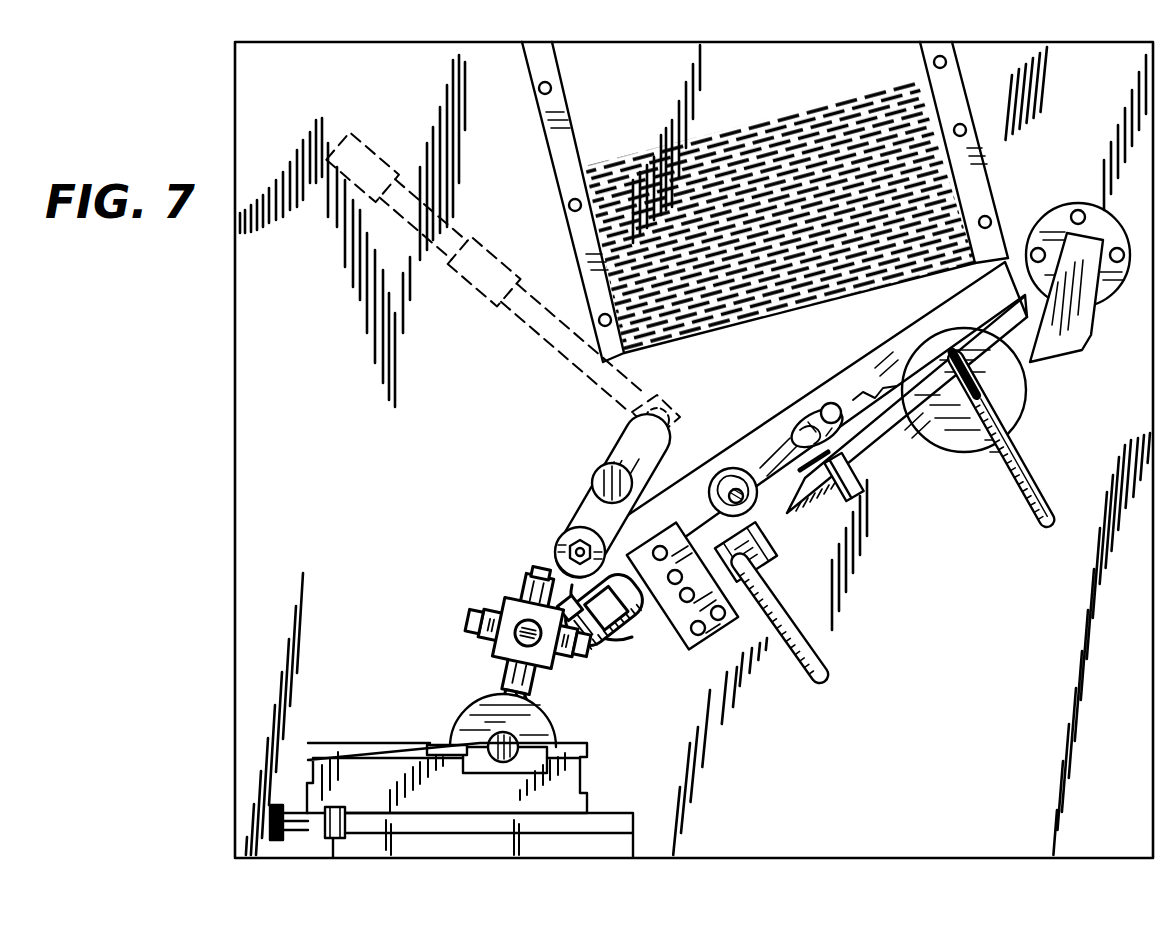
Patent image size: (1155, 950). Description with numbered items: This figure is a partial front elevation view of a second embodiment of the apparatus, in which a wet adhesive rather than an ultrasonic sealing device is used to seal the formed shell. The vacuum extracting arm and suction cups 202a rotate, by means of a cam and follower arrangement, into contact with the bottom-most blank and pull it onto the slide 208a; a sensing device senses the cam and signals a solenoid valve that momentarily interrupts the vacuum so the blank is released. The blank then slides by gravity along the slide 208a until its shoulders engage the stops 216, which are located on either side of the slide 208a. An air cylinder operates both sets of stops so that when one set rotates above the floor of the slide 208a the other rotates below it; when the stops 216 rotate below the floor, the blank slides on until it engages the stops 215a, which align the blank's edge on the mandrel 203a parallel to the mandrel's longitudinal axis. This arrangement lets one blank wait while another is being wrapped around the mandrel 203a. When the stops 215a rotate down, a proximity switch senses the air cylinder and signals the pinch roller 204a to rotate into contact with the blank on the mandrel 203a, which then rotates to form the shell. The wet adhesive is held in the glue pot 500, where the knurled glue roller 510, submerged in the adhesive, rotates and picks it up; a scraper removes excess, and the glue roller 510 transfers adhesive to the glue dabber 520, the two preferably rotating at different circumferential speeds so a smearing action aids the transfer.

The vacuum extracting arm and suction cups 202a is at (914, 482).
The mandrel 203a is at (566, 580).
The pinch roller 204a is at (550, 537).
The slide 208a is at (778, 318).
The stops 215a is at (760, 518).
The stops 216 is at (829, 408).
The glue pot 500 is at (594, 789).
The glue roller 510 is at (568, 731).
The glue dabber 520 is at (468, 640).